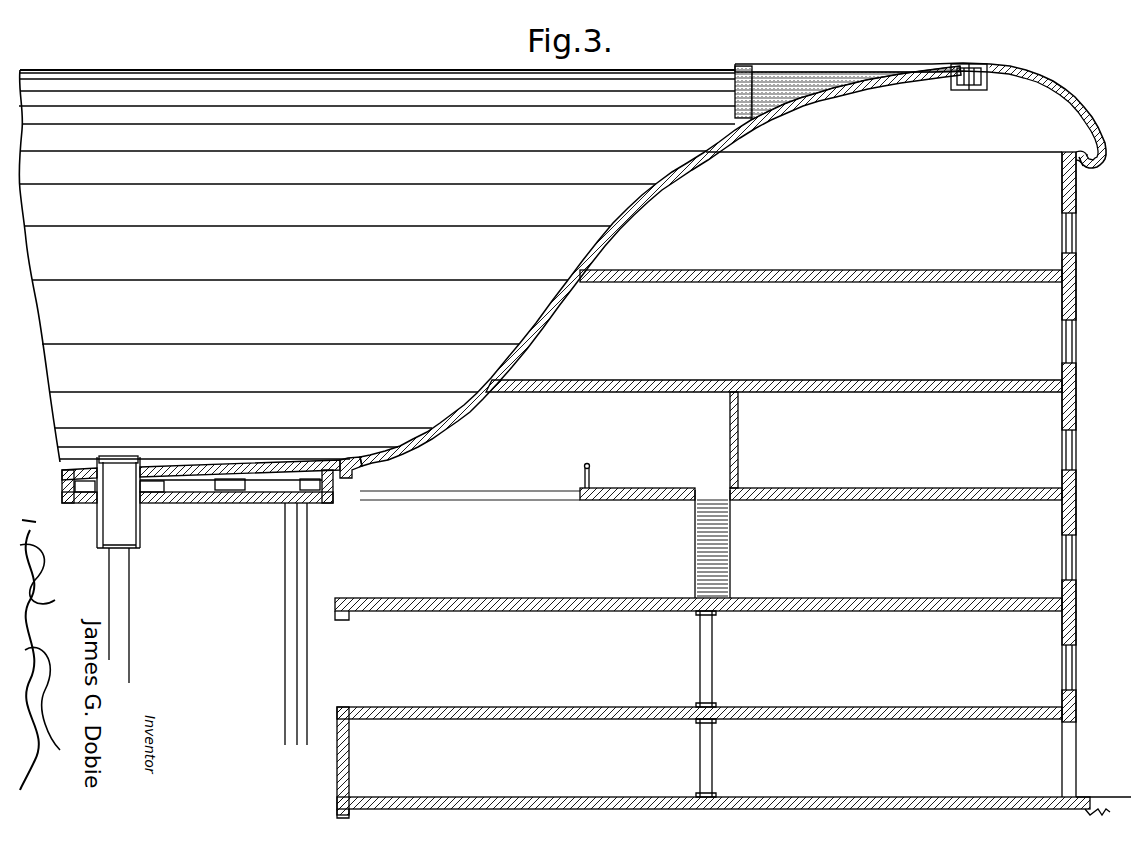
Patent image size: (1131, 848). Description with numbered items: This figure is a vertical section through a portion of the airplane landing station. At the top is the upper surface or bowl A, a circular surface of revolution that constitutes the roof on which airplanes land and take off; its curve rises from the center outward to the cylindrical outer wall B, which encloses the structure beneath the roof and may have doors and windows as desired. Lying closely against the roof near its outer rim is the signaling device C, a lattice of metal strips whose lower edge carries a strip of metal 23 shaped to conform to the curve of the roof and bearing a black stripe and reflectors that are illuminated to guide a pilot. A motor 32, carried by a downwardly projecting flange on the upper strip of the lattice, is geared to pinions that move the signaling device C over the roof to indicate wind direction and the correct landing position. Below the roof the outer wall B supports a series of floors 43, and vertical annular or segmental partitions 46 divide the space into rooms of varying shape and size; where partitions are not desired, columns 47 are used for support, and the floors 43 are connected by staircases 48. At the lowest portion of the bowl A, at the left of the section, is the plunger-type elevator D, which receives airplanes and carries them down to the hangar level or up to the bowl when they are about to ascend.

The upper surface or bowl A is at (1012, 66).
The cylindrical outer wall B is at (1077, 384).
The signaling device C is at (796, 74).
The elevator D is at (194, 500).
The strip of metal 23 is at (743, 65).
The motor 32 is at (970, 90).
The floors 43 is at (612, 590).
The vertical annular or segmental partitions 46 is at (738, 437).
The columns 47 is at (713, 662).
The staircases 48 is at (731, 552).